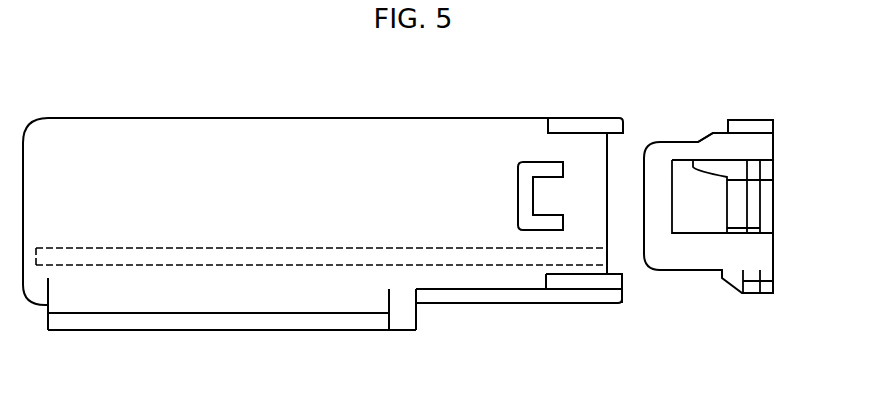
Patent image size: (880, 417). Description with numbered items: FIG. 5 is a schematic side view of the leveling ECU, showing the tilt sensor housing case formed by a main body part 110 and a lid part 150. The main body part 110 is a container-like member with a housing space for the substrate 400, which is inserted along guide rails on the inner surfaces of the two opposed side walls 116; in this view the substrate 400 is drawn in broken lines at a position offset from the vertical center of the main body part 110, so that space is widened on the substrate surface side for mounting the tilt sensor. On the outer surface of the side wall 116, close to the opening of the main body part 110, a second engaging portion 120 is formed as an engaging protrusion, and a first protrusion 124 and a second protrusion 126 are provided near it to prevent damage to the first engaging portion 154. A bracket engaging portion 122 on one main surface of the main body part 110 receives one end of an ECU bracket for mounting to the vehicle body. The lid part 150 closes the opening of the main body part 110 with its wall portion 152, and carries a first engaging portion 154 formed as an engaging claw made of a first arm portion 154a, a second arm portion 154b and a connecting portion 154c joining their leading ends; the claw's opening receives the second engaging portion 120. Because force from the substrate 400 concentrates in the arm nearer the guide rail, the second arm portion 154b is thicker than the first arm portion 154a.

The main body part 110 is at (252, 110).
The side wall 116 is at (351, 155).
The second engaging portion 120 is at (532, 162).
The bracket engaging portion 122 is at (230, 330).
The first protrusion 124 is at (597, 118).
The second protrusion 126 is at (577, 280).
The substrate 400 is at (475, 262).
The lid part 150 is at (767, 110).
The wall portion 152 is at (774, 175).
The first engaging portion 154 is at (682, 132).
The first arm portion 154a is at (711, 151).
The second arm portion 154b is at (702, 253).
The connecting portion 154c is at (630, 210).